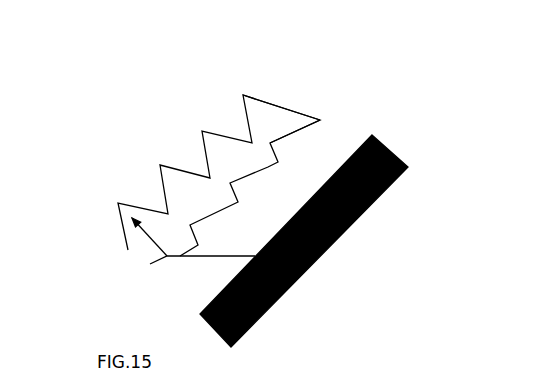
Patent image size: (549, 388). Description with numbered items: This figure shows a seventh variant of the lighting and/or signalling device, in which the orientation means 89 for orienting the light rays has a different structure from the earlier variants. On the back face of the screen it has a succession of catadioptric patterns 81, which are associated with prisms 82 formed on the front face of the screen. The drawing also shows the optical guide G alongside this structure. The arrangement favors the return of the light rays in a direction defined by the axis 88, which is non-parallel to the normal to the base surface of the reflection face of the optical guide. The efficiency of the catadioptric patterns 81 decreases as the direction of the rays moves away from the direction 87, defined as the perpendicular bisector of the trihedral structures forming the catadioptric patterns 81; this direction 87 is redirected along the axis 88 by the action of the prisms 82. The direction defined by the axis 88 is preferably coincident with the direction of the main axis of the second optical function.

The catadioptric patterns 81 is at (200, 128).
The prisms 82 is at (268, 169).
The direction 87 is at (151, 240).
The axis 88 is at (207, 259).
The orientation means 89 is at (313, 105).
The ground / glass substrate G is at (321, 263).